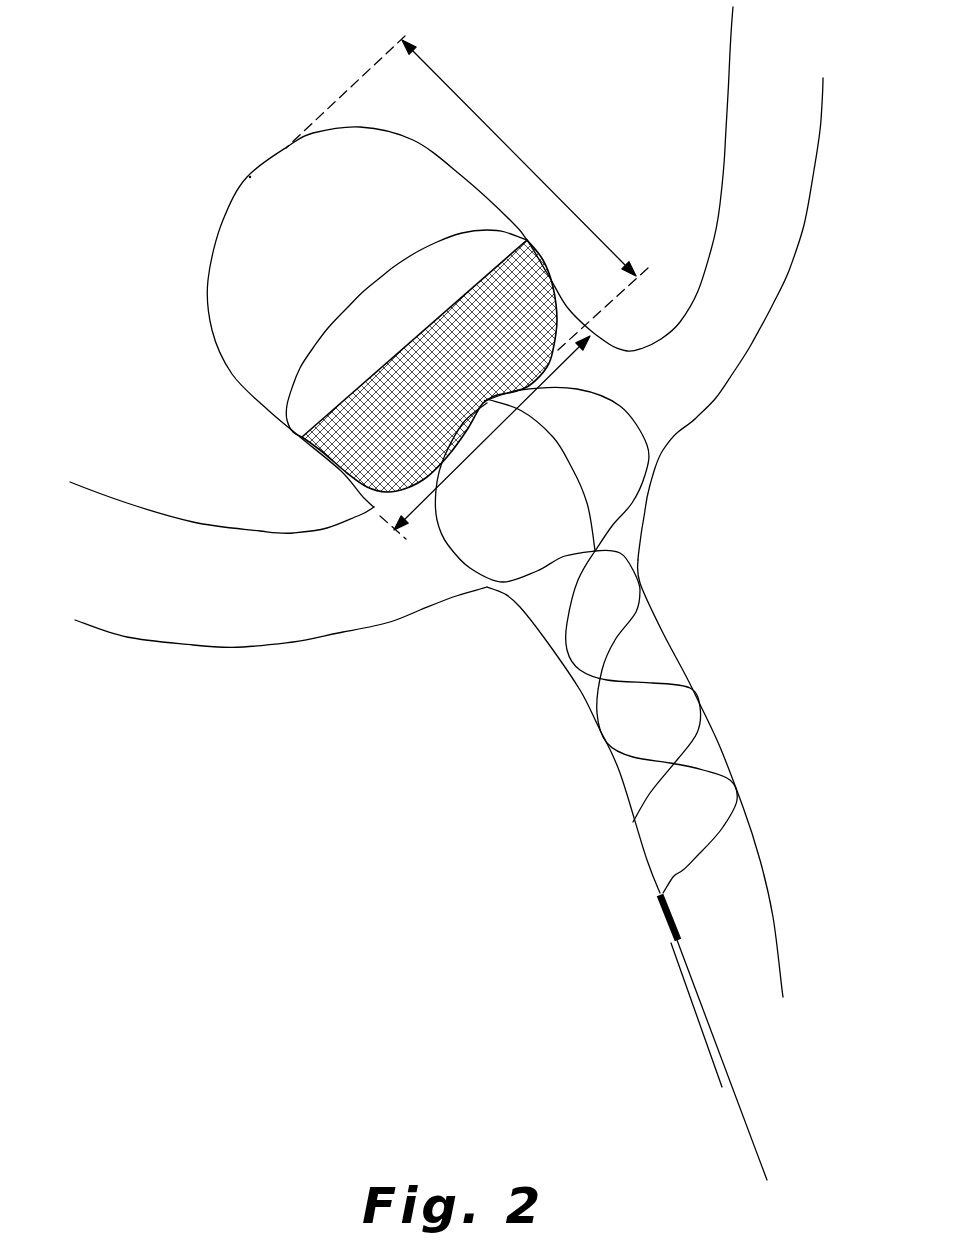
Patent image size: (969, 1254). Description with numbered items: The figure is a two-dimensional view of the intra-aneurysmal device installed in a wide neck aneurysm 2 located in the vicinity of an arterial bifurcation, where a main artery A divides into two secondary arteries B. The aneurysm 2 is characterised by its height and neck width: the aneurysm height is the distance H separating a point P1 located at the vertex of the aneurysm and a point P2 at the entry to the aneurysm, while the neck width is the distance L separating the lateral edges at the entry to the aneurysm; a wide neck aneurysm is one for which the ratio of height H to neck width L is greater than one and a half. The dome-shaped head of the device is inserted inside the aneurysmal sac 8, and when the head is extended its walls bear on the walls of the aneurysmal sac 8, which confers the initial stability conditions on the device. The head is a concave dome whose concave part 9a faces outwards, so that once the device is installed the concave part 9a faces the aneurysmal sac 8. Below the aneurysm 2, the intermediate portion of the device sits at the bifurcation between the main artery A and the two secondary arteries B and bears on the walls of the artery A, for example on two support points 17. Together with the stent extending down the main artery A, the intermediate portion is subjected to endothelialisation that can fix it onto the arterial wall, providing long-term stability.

The aneurysm 2 is at (313, 330).
The aneurysmal sac 8 is at (252, 228).
The concave part 9a is at (348, 376).
The support points 17 is at (674, 493).
The point located at the vertex of the aneurysm P1 is at (247, 165).
The point at the entry to the aneurysm P2 is at (497, 405).
The aneurysm height H is at (528, 167).
The neck width L is at (490, 435).
The main artery A is at (635, 870).
The secondary arteries B is at (446, 327).